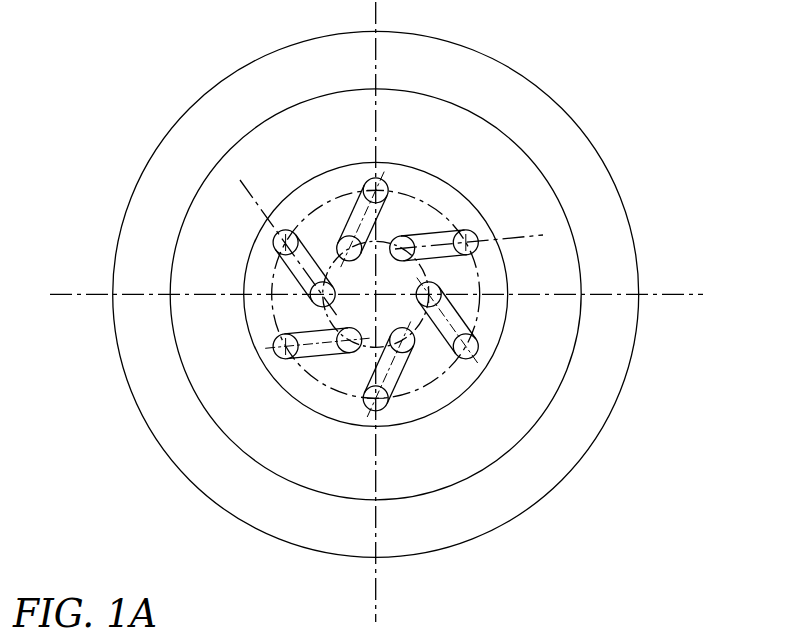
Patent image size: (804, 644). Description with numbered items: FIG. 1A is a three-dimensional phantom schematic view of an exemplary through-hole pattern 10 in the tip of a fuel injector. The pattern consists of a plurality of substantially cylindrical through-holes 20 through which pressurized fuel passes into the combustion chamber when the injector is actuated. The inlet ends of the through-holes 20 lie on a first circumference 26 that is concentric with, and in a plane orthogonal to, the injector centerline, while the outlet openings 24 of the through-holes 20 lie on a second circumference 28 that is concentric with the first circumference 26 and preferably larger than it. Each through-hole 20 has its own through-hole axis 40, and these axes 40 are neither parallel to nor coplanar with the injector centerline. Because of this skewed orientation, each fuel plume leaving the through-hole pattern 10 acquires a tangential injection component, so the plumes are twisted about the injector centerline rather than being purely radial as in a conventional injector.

The through-hole pattern 10 is at (166, 104).
The through-holes 20 is at (356, 198).
The outlet openings 24 is at (376, 281).
The first circumference 26 is at (367, 348).
The second circumference 28 is at (433, 382).
The through-hole axis 40 is at (253, 192).